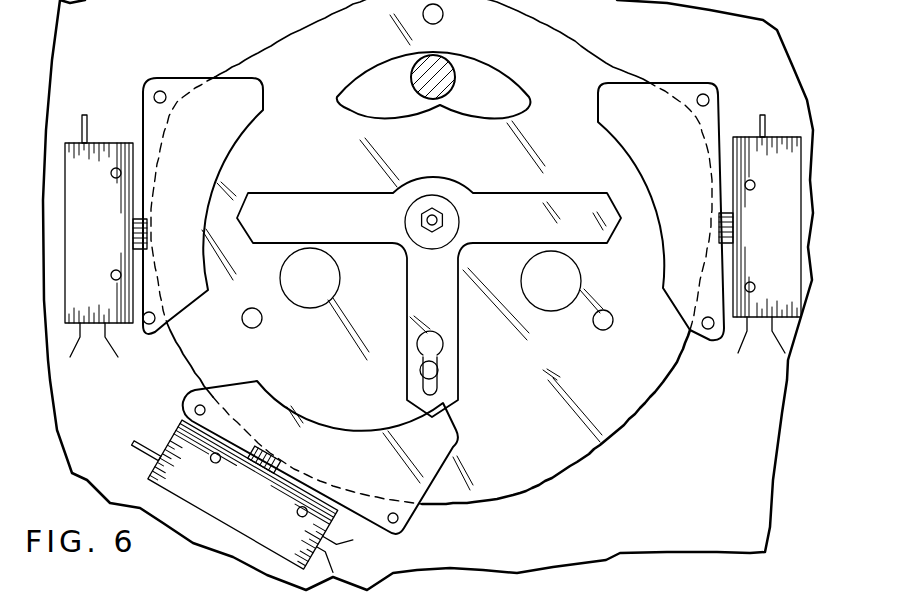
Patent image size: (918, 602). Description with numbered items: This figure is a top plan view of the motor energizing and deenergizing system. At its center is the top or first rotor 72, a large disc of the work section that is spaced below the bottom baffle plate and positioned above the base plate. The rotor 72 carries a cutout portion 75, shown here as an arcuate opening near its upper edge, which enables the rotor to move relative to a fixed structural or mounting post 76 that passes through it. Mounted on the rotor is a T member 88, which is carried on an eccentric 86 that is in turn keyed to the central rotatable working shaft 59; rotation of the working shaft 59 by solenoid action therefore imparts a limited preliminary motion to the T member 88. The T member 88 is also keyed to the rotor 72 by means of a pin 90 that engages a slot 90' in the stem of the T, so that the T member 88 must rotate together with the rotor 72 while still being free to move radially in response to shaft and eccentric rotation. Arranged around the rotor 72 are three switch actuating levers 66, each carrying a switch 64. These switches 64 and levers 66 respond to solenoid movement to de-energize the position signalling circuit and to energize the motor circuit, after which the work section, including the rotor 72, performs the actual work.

The central working shaft 59 is at (418, 218).
The switch 64 is at (95, 157).
The switch actuating lever 66 is at (175, 127).
The top rotor 72 is at (552, 460).
The cutout portion 75 is at (487, 100).
The mounting post 76 is at (427, 92).
The eccentric 86 is at (427, 247).
The T member 88 is at (506, 207).
The pin 90 is at (459, 377).
The slot 90' is at (461, 363).